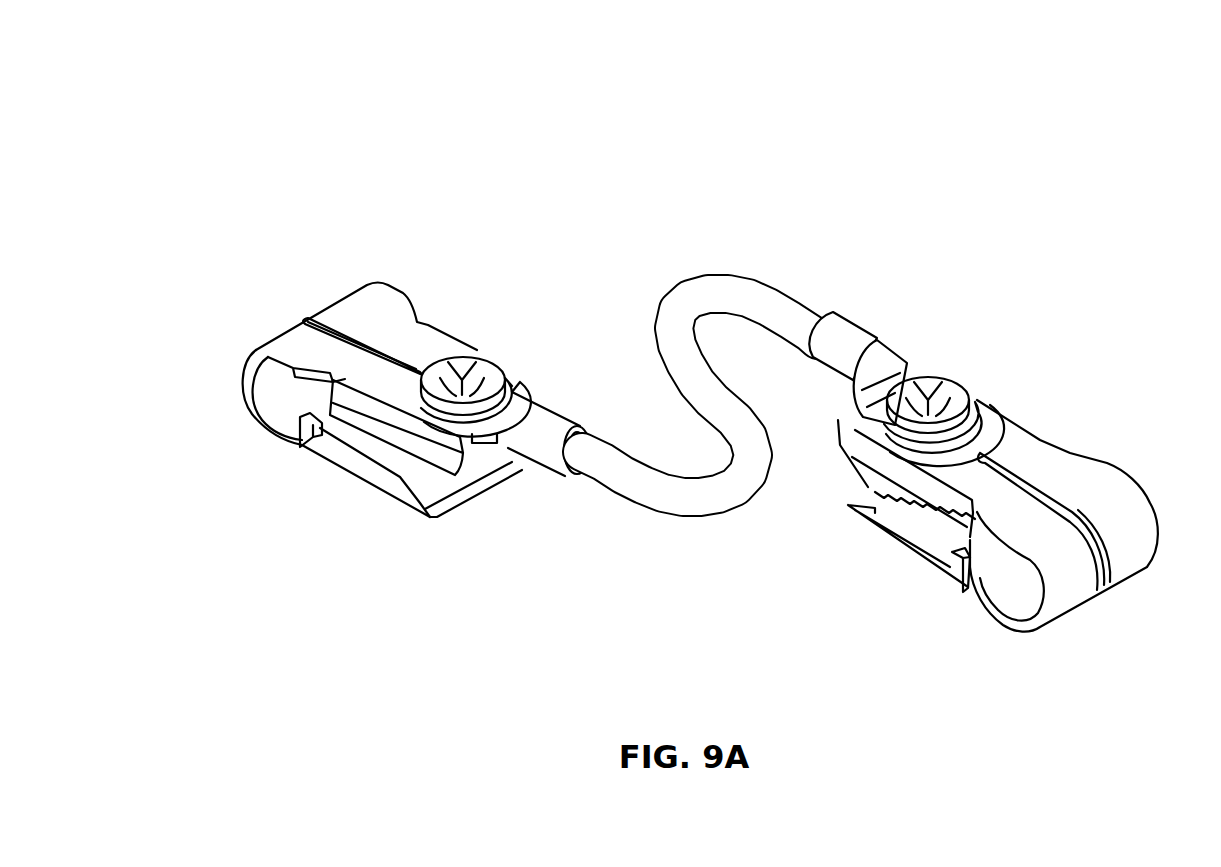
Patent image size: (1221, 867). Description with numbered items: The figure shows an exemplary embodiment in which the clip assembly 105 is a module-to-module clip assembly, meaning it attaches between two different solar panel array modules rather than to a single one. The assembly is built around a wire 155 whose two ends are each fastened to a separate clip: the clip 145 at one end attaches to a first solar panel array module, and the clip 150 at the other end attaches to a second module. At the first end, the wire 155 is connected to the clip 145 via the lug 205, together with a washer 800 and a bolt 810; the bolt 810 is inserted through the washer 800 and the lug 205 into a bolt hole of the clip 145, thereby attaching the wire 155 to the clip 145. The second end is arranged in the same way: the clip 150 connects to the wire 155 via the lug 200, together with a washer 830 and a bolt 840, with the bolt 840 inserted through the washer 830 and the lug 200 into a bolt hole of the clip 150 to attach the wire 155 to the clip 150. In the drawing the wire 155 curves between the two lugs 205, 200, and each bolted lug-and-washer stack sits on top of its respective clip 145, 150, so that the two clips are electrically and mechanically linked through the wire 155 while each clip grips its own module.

The clip assembly 105 is at (860, 126).
The clip 145 is at (367, 260).
The clip 150 is at (1200, 556).
The wire 155 is at (647, 520).
The lug 200 is at (888, 448).
The lug 205 is at (502, 452).
The washer 800 is at (524, 364).
The bolt 810 is at (483, 343).
The washer 830 is at (990, 383).
The bolt 840 is at (940, 355).